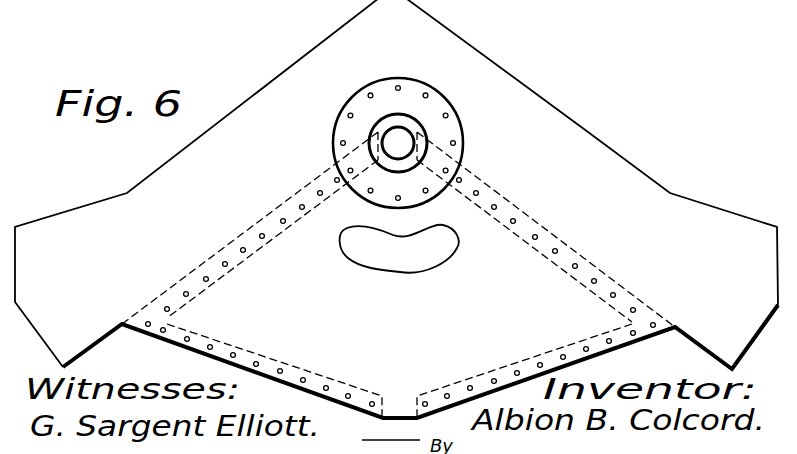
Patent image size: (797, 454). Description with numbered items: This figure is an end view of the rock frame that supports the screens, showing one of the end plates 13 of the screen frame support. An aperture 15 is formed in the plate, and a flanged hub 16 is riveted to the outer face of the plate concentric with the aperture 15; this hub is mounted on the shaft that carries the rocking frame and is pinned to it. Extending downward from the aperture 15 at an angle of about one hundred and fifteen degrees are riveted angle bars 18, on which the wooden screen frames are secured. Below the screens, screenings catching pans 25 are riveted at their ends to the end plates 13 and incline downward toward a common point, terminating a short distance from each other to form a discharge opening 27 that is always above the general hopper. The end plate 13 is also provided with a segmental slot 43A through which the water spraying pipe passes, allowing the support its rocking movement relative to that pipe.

The end plate 13 is at (586, 143).
The aperture 15 is at (398, 143).
The flanged hub 16 is at (428, 127).
The angle bar 18 is at (272, 217).
The screenings catching pan 25 is at (322, 362).
The discharge opening 27 is at (399, 429).
The segmental slot 43A is at (399, 249).